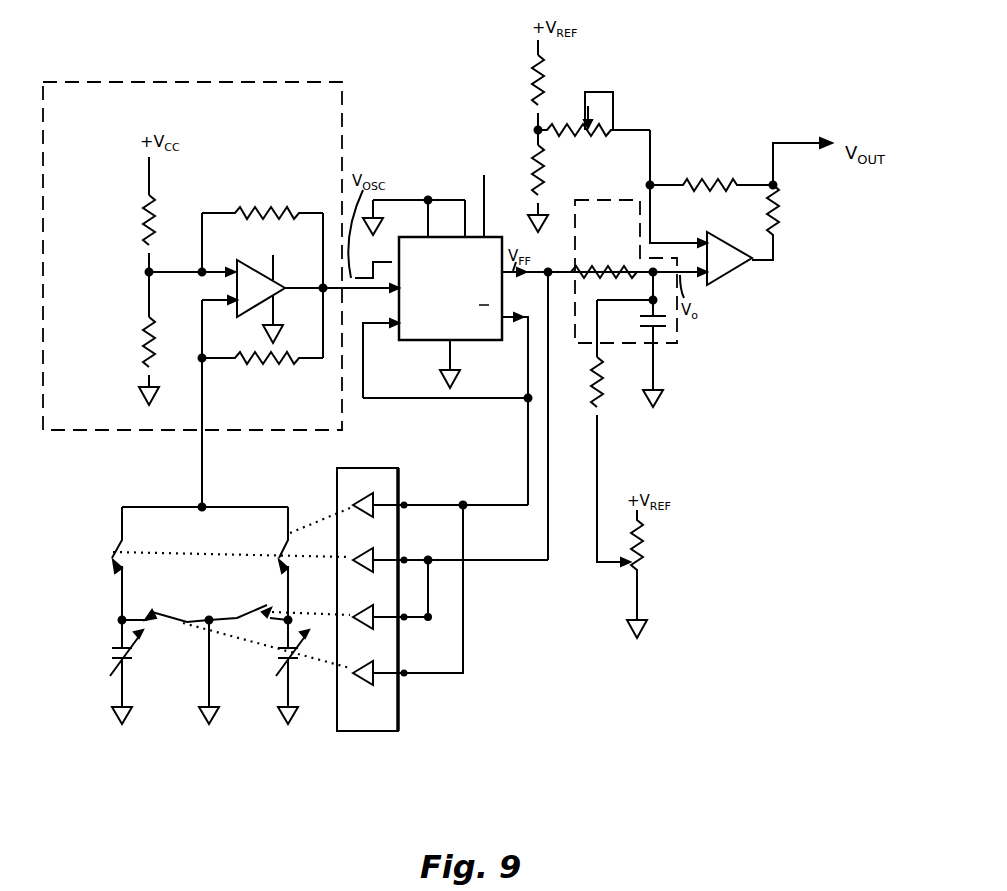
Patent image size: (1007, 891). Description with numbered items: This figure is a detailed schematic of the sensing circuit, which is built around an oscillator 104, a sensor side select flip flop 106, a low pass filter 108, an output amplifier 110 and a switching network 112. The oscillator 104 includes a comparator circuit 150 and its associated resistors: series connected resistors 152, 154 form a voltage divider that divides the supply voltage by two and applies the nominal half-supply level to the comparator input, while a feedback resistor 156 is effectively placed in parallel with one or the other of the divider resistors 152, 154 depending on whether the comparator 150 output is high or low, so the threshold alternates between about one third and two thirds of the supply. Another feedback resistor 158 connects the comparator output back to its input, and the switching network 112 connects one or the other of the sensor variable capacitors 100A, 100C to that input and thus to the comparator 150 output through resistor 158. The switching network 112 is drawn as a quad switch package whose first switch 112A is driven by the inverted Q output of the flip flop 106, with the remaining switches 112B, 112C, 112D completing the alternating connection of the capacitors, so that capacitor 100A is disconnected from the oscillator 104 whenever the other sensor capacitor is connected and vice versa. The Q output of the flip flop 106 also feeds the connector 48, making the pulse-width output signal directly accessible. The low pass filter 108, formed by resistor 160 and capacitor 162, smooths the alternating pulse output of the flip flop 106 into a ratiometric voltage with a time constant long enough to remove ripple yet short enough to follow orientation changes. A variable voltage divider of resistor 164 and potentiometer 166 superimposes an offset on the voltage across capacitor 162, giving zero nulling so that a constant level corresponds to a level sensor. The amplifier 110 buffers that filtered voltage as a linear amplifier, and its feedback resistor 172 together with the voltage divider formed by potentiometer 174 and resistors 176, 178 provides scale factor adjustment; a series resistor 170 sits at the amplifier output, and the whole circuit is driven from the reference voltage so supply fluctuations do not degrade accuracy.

The oscillator 104 is at (150, 82).
The resistor 152 is at (147, 215).
The resistor 154 is at (147, 350).
The feedback resistor 156 is at (248, 212).
The feedback resistor 158 is at (243, 362).
The comparator circuit 150 is at (274, 291).
The flip flop 106 is at (477, 236).
The connector 48 is at (570, 282).
The resistor 176 is at (532, 94).
The resistor 178 is at (533, 153).
The potentiometer 174 is at (591, 92).
The feedback resistor 172 is at (738, 178).
The output resistor 170 is at (775, 214).
The output amplifier 110 is at (752, 262).
The low pass filter 108 is at (670, 332).
The resistor 160 is at (630, 276).
The capacitor 162 is at (657, 332).
The resistor 164 is at (594, 404).
The potentiometer 166 is at (630, 570).
The switching network 112 is at (450, 699).
The first switch 112A is at (322, 521).
The analog switch 112B is at (222, 553).
The analog switch 112C is at (307, 611).
The analog switch 112D is at (330, 673).
The sensor variable capacitor 100A is at (137, 655).
The variable capacitor 100C is at (276, 654).